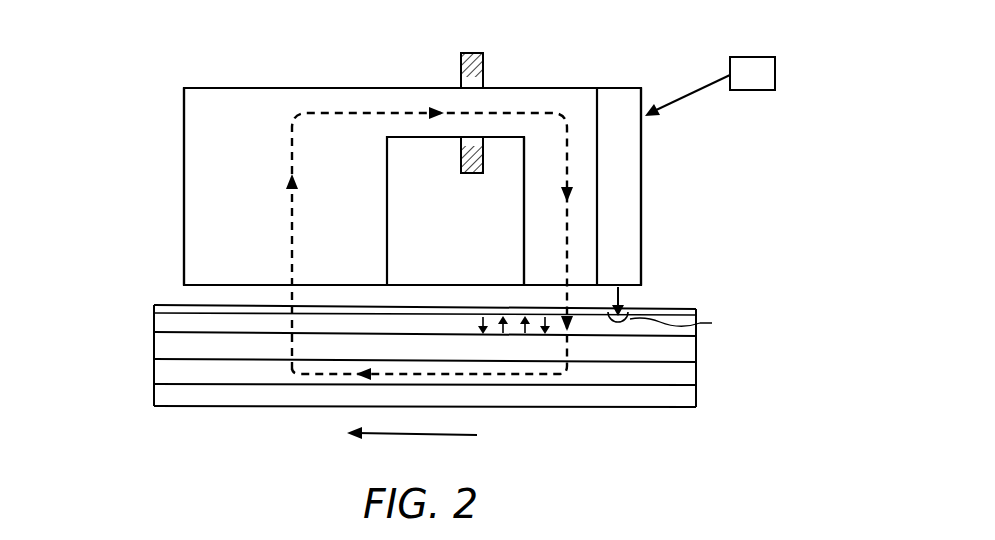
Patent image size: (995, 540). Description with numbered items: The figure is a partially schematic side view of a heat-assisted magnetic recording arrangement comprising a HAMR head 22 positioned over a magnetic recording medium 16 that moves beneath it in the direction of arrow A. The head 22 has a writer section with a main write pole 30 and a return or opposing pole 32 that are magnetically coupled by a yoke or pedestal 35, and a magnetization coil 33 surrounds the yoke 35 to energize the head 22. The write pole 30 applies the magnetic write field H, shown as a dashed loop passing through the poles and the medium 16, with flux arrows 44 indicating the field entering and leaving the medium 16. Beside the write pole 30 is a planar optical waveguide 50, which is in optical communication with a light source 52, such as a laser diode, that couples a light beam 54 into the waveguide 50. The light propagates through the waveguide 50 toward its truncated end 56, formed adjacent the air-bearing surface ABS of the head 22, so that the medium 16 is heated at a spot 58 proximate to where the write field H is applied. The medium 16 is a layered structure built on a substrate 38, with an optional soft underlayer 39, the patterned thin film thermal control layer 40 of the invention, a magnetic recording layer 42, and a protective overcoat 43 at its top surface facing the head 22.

The magnetic recording medium 16 is at (113, 281).
The HAMR head 22 is at (150, 97).
The main write pole 30 is at (523, 240).
The return pole 32 is at (195, 165).
The magnetization coil 33 is at (461, 70).
The yoke 35 is at (514, 96).
The substrate 38 is at (160, 396).
The soft underlayer 39 is at (165, 374).
The patterned thin film thermal control layer 40 is at (160, 348).
The magnetic recording layer 42 is at (158, 322).
The protective overcoat 43 is at (157, 302).
The magnetic flux 44 is at (480, 318).
The planar optical waveguide 50 is at (655, 176).
The light source 52 is at (753, 66).
The light beam 54 is at (689, 94).
The truncated end 56 is at (640, 290).
The heated spot 58 is at (621, 299).
The magnetic write field H is at (292, 157).
The air-bearing surface ABS is at (537, 292).
The direction of medium movement A is at (410, 436).